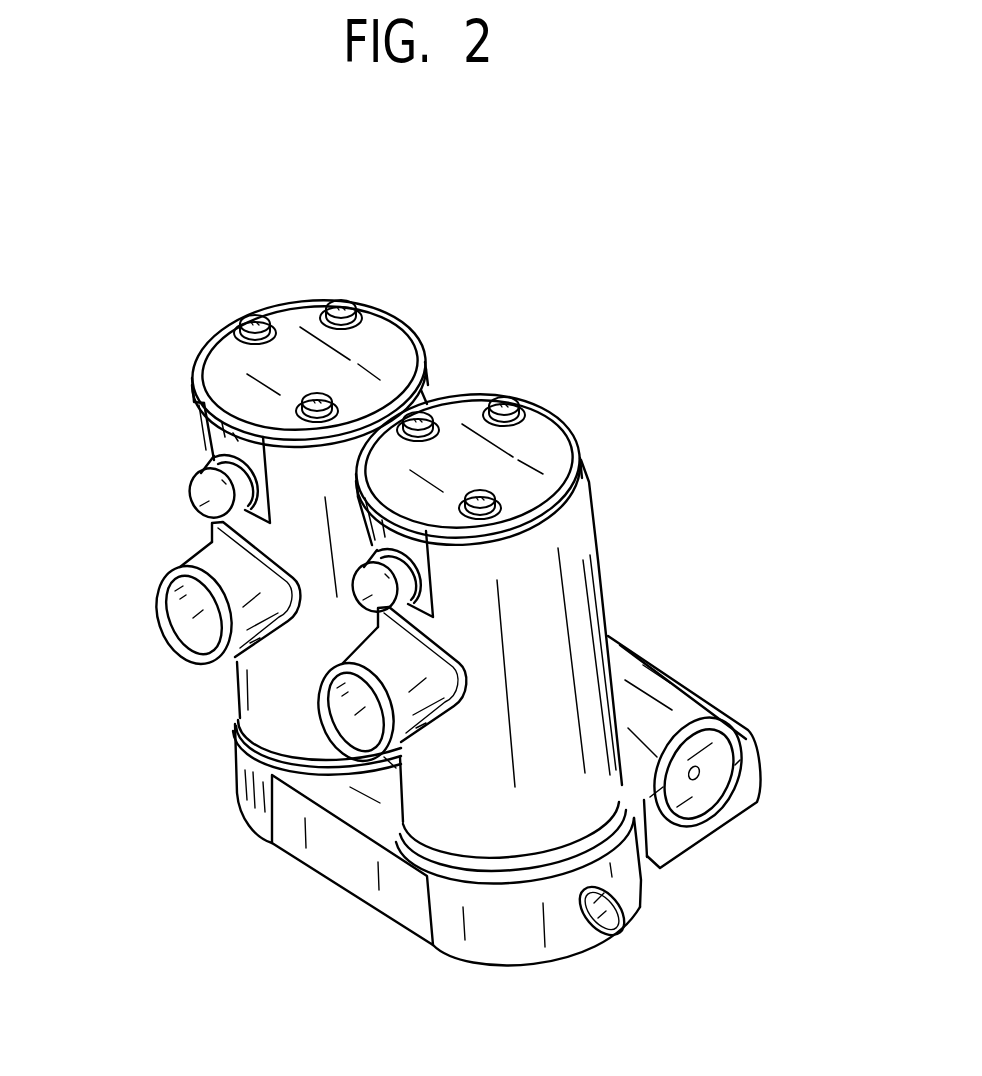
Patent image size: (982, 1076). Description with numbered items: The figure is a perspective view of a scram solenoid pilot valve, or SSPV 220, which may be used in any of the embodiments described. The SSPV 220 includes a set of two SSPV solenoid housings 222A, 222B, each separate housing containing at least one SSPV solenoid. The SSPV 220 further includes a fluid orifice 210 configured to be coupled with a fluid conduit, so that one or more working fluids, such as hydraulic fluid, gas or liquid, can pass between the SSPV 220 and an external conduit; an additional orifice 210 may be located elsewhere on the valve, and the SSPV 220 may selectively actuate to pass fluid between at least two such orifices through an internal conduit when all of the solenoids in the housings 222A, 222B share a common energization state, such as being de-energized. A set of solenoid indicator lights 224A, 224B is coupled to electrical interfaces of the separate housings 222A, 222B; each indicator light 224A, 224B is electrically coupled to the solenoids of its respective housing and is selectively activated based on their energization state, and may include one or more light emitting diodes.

The scram solenoid pilot valve 220 is at (551, 292).
The SSPV solenoid housing 222A is at (212, 321).
The SSPV solenoid housing 222B is at (590, 436).
The solenoid indicator light 224A is at (180, 504).
The solenoid indicator light 224B is at (354, 617).
The fluid orifice 210 is at (704, 788).